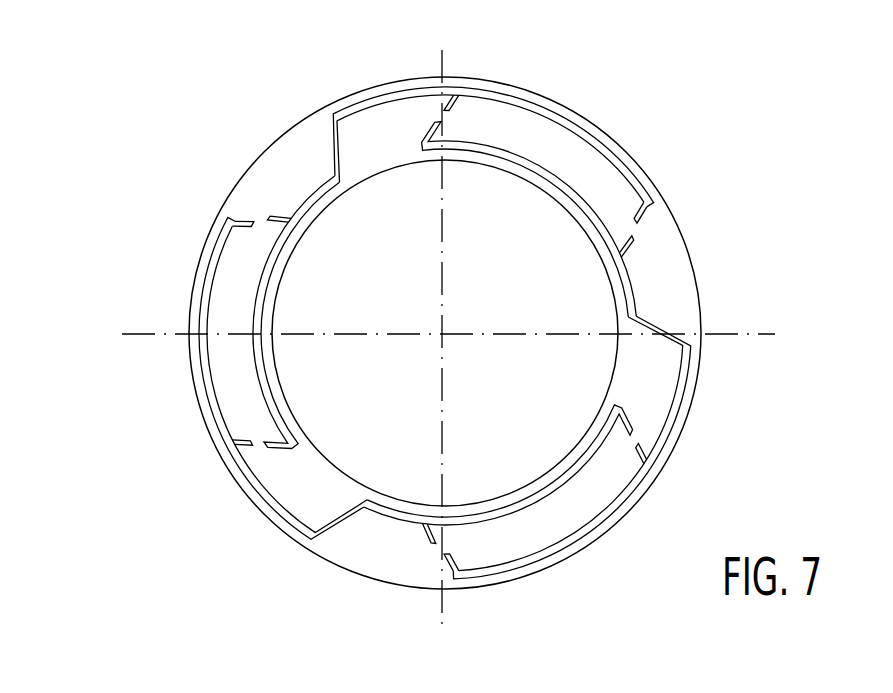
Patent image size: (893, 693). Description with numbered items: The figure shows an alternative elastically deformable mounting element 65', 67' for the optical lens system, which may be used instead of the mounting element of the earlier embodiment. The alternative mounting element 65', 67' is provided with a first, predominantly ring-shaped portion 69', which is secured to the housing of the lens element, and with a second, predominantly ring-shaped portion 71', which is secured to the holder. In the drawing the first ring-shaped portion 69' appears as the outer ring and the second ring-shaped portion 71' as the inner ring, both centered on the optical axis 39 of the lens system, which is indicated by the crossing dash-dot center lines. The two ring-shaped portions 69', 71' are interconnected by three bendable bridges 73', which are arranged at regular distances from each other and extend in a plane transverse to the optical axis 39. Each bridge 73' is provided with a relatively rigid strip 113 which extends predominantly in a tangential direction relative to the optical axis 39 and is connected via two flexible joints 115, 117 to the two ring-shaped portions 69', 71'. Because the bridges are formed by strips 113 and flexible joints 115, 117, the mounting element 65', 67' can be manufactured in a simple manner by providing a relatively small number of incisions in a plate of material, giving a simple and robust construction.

The optical axis 39 is at (447, 338).
The alternative mounting element 65' is at (131, 570).
The alternative mounting element 67' is at (129, 591).
The first ring-shaped portion 69' is at (414, 333).
The second ring-shaped portion 71' is at (445, 333).
The bendable bridge 73' is at (444, 333).
The strip 113 is at (561, 138).
The flexible joint 115 is at (441, 116).
The flexible joint 117 is at (259, 220).